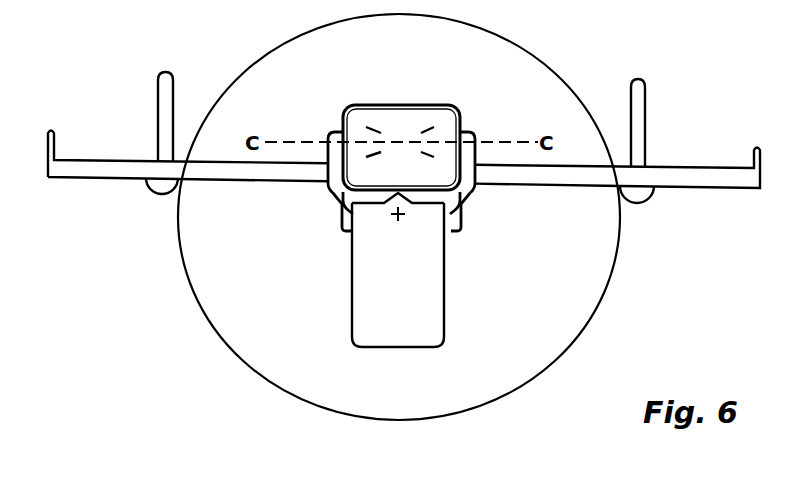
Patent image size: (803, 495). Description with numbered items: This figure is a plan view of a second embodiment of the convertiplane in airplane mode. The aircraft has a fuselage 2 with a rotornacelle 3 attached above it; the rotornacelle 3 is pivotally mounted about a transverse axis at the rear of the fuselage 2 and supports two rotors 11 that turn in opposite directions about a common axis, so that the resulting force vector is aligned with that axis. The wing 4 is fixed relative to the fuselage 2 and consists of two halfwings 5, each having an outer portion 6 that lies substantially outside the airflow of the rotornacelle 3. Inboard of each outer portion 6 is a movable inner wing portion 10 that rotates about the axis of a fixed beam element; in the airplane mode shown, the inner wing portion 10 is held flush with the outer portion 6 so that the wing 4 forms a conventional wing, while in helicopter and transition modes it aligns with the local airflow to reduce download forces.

The fuselage 2 is at (390, 160).
The rotornacelle 3 is at (385, 295).
The wing 4 is at (707, 215).
The halfwing 5 is at (690, 165).
The outer portion 6 is at (665, 178).
The inner wing portion 10 is at (535, 178).
The rotor 11 is at (520, 383).